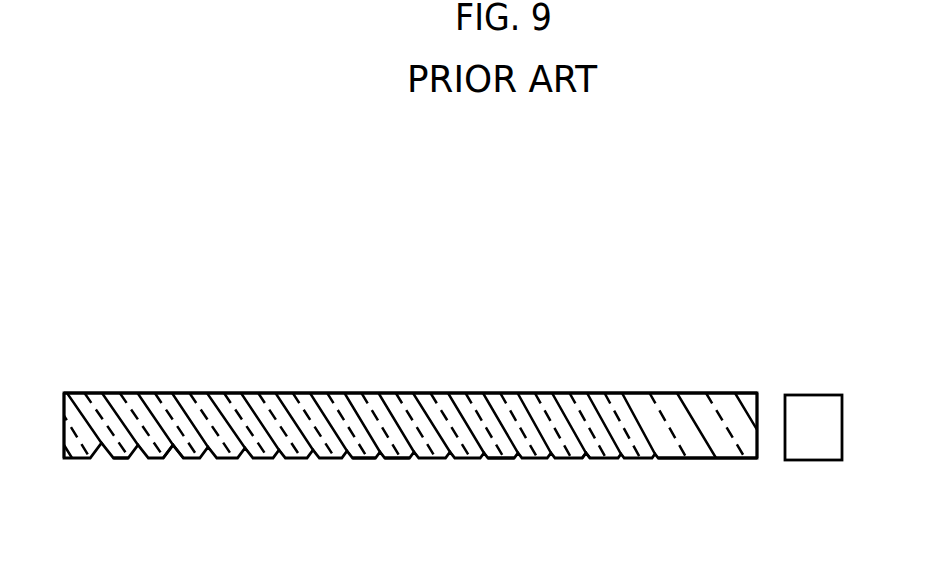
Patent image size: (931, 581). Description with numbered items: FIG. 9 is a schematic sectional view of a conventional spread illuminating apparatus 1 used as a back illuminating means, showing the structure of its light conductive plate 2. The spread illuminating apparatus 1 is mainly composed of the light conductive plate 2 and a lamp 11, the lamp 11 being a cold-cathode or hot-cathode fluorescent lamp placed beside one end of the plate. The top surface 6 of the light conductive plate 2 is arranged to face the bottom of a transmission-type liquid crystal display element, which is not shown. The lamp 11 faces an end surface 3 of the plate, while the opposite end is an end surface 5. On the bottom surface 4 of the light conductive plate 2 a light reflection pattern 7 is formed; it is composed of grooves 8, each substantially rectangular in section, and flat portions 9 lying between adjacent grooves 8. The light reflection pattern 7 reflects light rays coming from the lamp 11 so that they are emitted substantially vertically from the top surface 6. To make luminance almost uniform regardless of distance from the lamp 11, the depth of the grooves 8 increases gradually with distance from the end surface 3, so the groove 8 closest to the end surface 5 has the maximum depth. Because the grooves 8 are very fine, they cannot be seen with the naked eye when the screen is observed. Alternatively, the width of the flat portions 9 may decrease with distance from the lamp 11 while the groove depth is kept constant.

The spread illuminating apparatus 1 is at (437, 377).
The light conductive plate 2 is at (522, 420).
The end surface 3 is at (757, 434).
The bottom surface 4 is at (693, 460).
The end surface 5 is at (57, 396).
The top surface 6 is at (305, 393).
The light reflection pattern 7 is at (381, 475).
The grooves 8 is at (613, 517).
The flat portions 9 is at (500, 517).
The lamp 11 is at (812, 395).